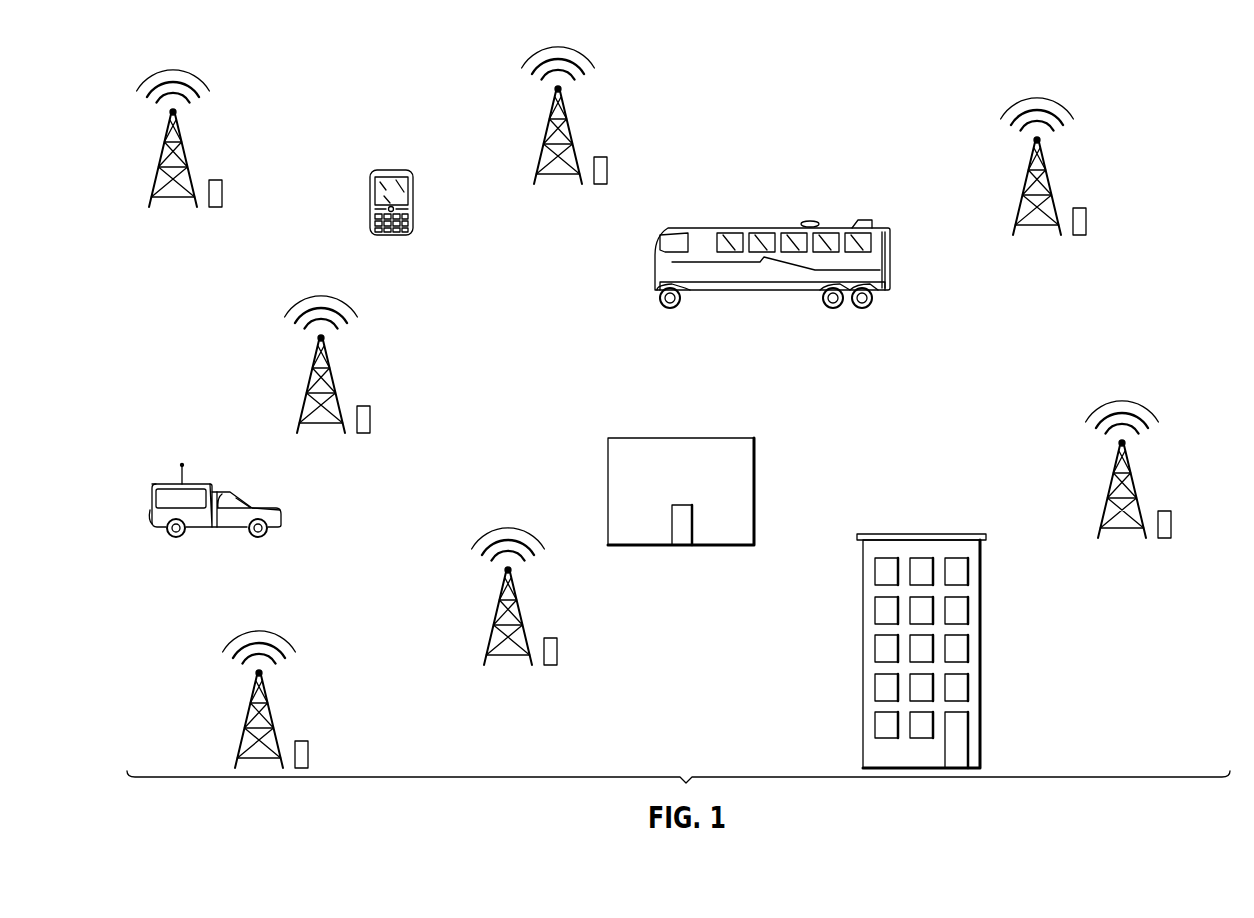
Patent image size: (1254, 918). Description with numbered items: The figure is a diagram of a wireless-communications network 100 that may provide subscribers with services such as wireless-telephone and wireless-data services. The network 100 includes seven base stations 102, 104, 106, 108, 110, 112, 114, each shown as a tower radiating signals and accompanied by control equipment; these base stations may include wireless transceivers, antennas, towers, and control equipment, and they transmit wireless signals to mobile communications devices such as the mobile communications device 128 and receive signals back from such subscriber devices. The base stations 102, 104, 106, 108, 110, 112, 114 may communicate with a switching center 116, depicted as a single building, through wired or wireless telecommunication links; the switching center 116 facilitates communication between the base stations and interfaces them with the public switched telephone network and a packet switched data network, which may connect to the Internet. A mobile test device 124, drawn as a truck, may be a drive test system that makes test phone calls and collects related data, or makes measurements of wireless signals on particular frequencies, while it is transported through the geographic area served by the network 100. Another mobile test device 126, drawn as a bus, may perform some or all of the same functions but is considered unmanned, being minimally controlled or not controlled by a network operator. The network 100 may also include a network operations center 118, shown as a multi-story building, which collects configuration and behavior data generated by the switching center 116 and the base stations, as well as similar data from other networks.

The wireless-communications network 100 is at (1142, 112).
The base station 102 is at (174, 228).
The base station 104 is at (372, 345).
The base station 106 is at (310, 662).
The base station 108 is at (470, 584).
The base station 110 is at (630, 112).
The base station 112 is at (996, 102).
The base station 114 is at (1180, 435).
The switching center 116 is at (630, 437).
The network operations center 118 is at (921, 536).
The mobile test device 124 is at (242, 490).
The mobile test device 126 is at (760, 227).
The mobile communications device 128 is at (406, 172).